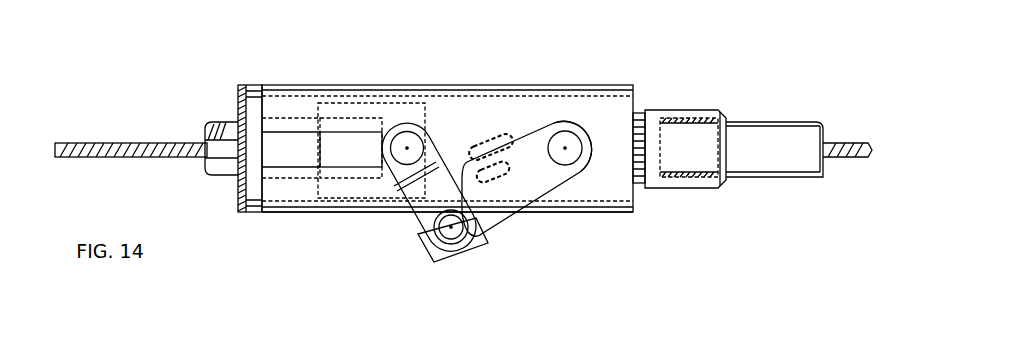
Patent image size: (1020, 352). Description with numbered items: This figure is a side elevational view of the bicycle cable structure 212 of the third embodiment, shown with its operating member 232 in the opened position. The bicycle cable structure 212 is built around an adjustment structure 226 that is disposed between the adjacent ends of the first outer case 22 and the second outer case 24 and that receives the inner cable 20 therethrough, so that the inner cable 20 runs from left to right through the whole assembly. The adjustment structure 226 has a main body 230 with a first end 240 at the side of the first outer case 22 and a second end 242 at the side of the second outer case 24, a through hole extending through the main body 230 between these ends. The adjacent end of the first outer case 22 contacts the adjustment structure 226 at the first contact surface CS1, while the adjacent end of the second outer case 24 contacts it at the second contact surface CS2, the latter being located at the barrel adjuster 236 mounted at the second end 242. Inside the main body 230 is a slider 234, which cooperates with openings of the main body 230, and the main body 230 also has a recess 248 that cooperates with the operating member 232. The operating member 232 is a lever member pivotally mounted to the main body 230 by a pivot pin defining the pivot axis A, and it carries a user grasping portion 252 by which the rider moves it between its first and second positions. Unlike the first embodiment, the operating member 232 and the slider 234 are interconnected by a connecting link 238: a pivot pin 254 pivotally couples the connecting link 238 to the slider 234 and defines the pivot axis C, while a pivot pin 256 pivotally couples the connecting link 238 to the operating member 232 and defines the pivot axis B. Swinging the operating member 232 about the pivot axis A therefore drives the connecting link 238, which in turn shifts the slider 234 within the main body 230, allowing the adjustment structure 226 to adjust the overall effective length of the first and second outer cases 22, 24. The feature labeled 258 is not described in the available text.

The bicycle cable structure 212 is at (140, 32).
The inner cable 20 is at (80, 138).
The first outer case 22 is at (210, 120).
The first end 240 is at (236, 97).
The main body 230 is at (622, 216).
The slider 234 is at (355, 128).
The pivot pin 254 is at (403, 126).
The connecting link 238 is at (456, 186).
The recess 248 is at (481, 137).
The operating member 232 is at (520, 128).
The user grasping portion 252 is at (574, 123).
The second end 242 is at (637, 87).
The barrel adjuster 236 is at (704, 106).
The second outer case 24 is at (770, 117).
The adjustment structure 226 is at (368, 253).
The pivot pin 256 is at (420, 238).
The second slot 258 is at (497, 184).
The first contact surface CS1 is at (365, 172).
The second contact surface CS2 is at (664, 167).
The pivot axis A is at (566, 152).
The pivot axis B is at (452, 230).
The pivot axis C is at (405, 152).